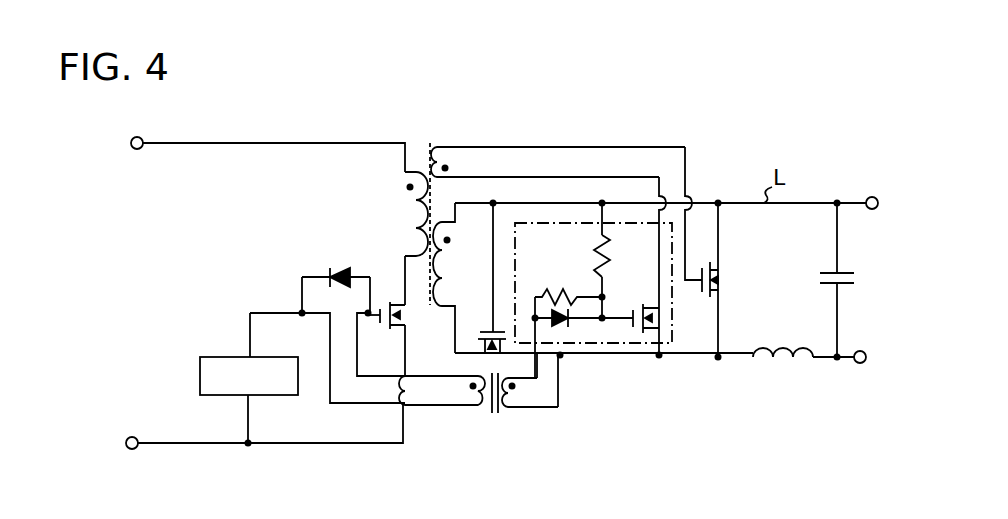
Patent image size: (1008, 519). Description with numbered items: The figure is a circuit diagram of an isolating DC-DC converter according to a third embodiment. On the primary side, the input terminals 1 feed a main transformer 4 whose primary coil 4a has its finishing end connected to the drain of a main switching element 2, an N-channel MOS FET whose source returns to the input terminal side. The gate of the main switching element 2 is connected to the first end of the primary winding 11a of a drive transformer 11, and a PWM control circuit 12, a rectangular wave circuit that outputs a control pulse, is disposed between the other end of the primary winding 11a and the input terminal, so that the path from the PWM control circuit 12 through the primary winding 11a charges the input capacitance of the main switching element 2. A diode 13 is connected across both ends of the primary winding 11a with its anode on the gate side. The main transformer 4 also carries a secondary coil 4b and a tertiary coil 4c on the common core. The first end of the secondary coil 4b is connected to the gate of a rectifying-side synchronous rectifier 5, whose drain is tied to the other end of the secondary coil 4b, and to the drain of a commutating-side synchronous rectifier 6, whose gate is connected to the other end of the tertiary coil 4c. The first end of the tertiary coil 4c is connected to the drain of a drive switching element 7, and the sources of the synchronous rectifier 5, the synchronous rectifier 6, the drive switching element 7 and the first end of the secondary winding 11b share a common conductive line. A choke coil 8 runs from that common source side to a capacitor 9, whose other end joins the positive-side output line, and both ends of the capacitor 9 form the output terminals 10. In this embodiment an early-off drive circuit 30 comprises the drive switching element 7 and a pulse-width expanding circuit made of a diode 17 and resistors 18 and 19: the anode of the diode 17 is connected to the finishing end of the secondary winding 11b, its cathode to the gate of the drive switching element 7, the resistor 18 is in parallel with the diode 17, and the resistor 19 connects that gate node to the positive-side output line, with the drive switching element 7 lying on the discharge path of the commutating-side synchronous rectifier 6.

The input terminal 1 is at (135, 309).
The main switching element 2 is at (394, 317).
The main transformer 4 is at (425, 210).
The primary coil 4a is at (408, 214).
The secondary coil 4b is at (453, 278).
The tertiary coil 4c is at (558, 162).
The rectifying-side synchronous rectifier 5 is at (494, 330).
The commutating-side synchronous rectifier 6 is at (719, 279).
The drive switching element 7 is at (646, 308).
The choke coil 8 is at (783, 340).
The capacitor 9 is at (834, 266).
The output terminal 10 is at (888, 283).
The drive transformer 11 is at (496, 405).
The primary winding 11a is at (442, 391).
The secondary winding 11b is at (531, 392).
The PWM control circuit 12 is at (222, 357).
The diode 13 is at (336, 279).
The diode 17 is at (578, 328).
The resistor 18 is at (568, 284).
The resistor 19 is at (618, 256).
The early-off drive circuit 30 is at (672, 323).